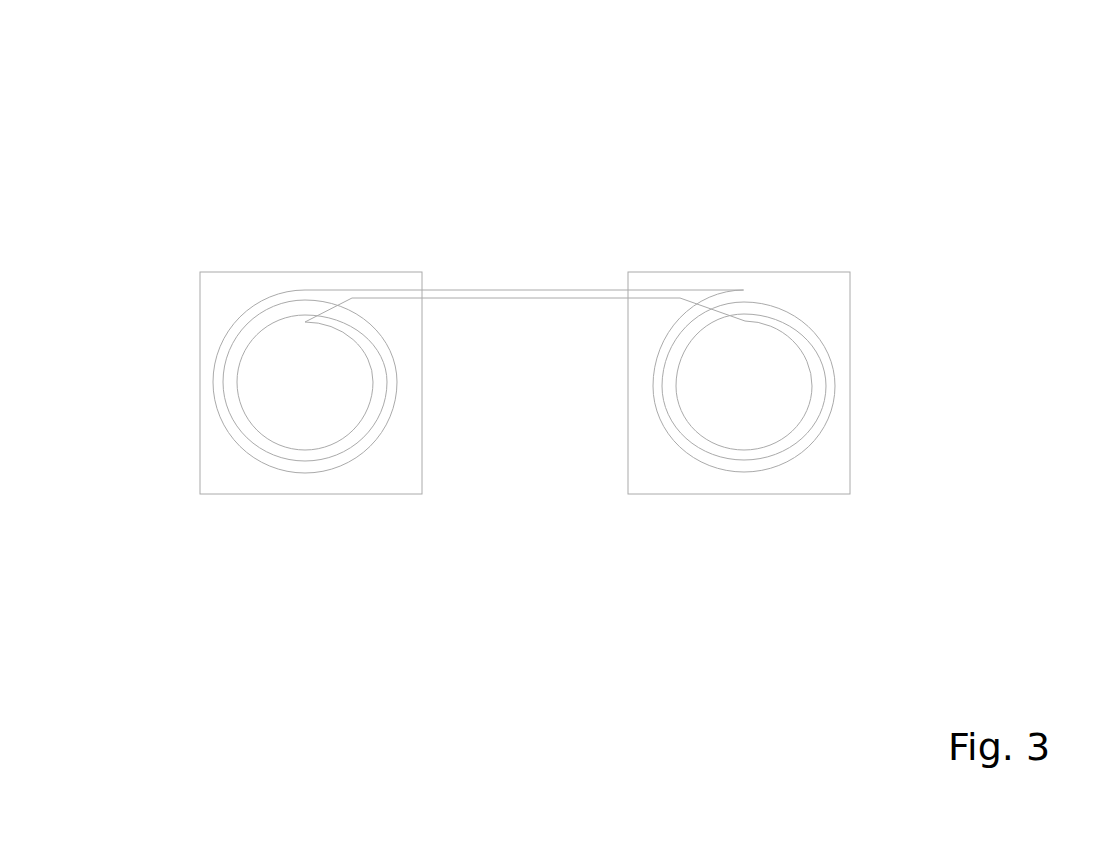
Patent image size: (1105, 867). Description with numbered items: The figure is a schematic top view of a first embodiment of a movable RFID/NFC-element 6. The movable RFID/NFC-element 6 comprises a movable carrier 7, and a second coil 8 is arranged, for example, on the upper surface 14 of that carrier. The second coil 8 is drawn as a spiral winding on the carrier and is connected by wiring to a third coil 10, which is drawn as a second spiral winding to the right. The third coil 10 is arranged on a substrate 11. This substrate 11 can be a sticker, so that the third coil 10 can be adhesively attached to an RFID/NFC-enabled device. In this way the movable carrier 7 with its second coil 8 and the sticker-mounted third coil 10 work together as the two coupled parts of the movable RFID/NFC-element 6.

The movable RFID/NFC-element 6 is at (376, 177).
The movable carrier 7 is at (292, 389).
The second coil 8 is at (217, 406).
The third coil 10 is at (716, 371).
The substrate 11 is at (657, 479).
The upper surface 14 is at (233, 477).